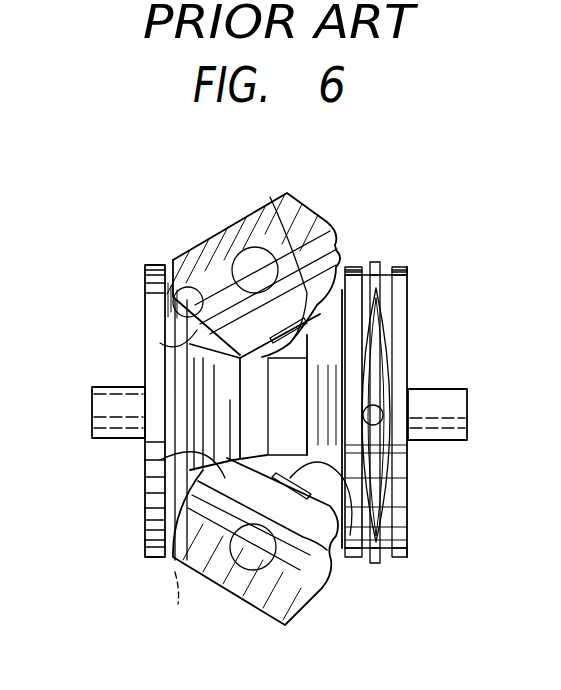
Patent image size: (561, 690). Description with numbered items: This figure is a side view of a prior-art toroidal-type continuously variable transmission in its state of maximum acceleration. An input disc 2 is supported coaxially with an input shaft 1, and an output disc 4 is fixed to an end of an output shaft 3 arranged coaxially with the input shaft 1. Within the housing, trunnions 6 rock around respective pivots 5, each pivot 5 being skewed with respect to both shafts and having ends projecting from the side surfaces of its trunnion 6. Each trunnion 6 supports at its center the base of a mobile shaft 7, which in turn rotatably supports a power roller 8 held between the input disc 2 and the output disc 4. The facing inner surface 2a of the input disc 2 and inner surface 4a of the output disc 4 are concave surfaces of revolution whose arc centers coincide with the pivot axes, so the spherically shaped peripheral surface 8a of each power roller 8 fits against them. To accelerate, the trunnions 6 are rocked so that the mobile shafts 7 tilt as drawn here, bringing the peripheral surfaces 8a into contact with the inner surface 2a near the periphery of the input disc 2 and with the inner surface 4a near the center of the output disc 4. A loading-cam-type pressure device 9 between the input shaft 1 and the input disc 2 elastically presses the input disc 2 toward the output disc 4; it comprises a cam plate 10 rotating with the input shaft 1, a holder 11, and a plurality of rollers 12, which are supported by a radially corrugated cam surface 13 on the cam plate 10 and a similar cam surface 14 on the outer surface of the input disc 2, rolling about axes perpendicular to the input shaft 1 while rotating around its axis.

The input shaft 1 is at (468, 407).
The input disc 2 is at (350, 265).
The inner surface of the input disc 2a is at (340, 570).
The output shaft 3 is at (103, 405).
The output disc 4 is at (153, 310).
The inner surface of the output disc 4a is at (157, 293).
The pivot 5 is at (216, 240).
The trunnion 6 is at (298, 214).
The mobile shaft 7 is at (282, 342).
The power roller 8 is at (190, 344).
The peripheral surface of the power roller 8a is at (272, 200).
The loading-cam-type pressure device 9 is at (405, 252).
The cam plate 10 is at (400, 303).
The holder 11 is at (380, 267).
The roller 12 is at (375, 262).
The cam surface 13 is at (380, 360).
The cam surface 14 is at (362, 462).